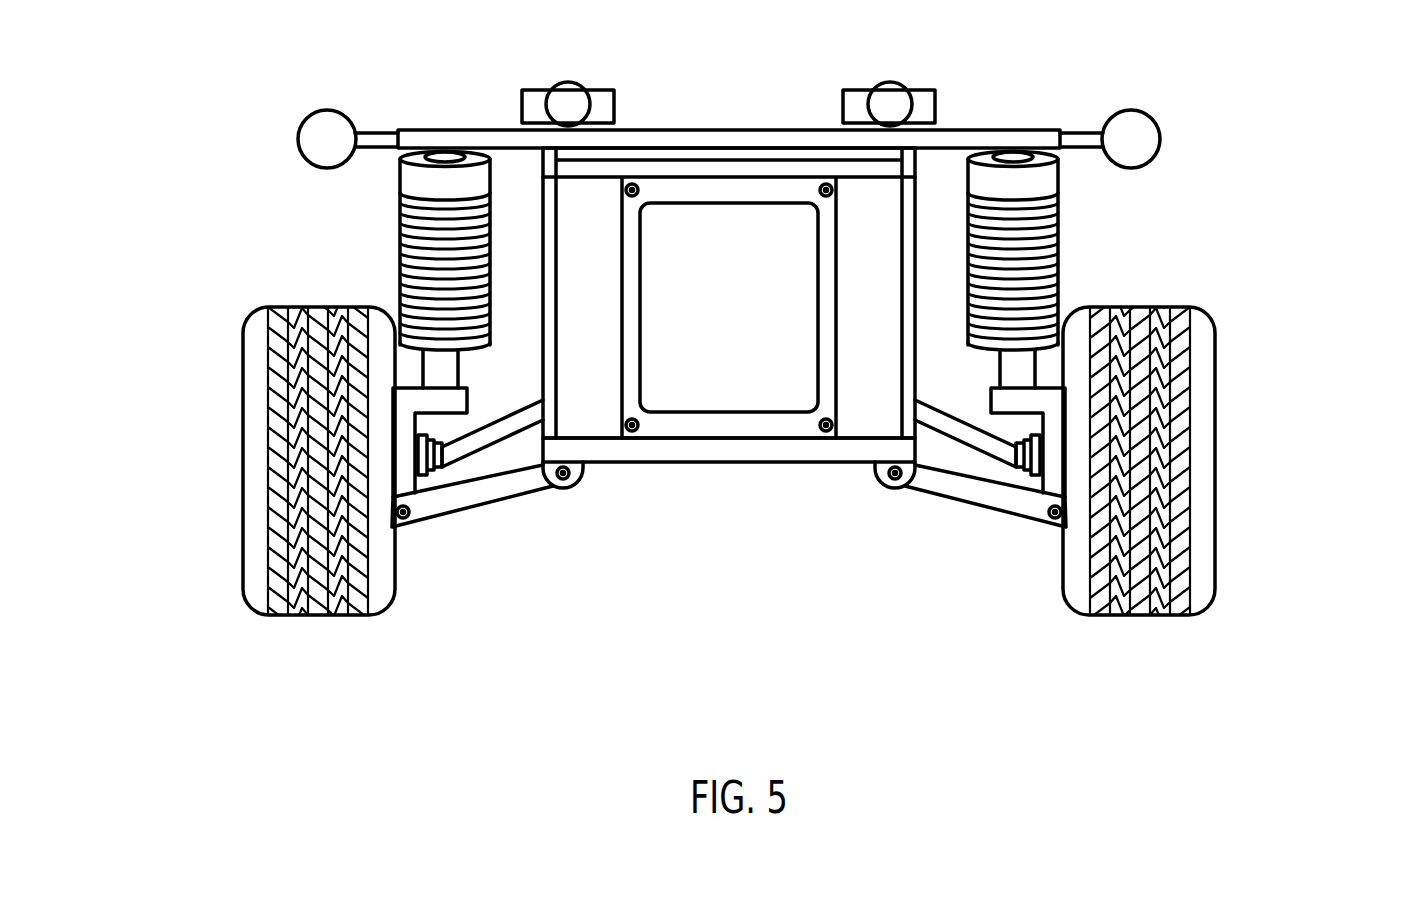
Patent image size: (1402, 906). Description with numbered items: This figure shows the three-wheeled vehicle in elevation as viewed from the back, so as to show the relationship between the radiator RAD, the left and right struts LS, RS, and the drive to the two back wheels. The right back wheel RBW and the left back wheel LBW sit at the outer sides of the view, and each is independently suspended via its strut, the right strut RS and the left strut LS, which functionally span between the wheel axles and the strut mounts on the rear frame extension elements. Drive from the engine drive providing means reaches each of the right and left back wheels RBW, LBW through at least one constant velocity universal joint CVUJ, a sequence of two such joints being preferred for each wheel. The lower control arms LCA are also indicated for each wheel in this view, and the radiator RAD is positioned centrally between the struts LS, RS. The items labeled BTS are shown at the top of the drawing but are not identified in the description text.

The ball-type steering/track sensor sphere BTS is at (308, 112).
The left strut LS is at (397, 258).
The right strut RS is at (1062, 258).
The left back wheel LBW is at (242, 465).
The right back wheel RBW is at (1217, 464).
The constant velocity universal joint CVUJ is at (483, 452).
The lower control arm LCA is at (430, 520).
The radiator RAD is at (750, 325).